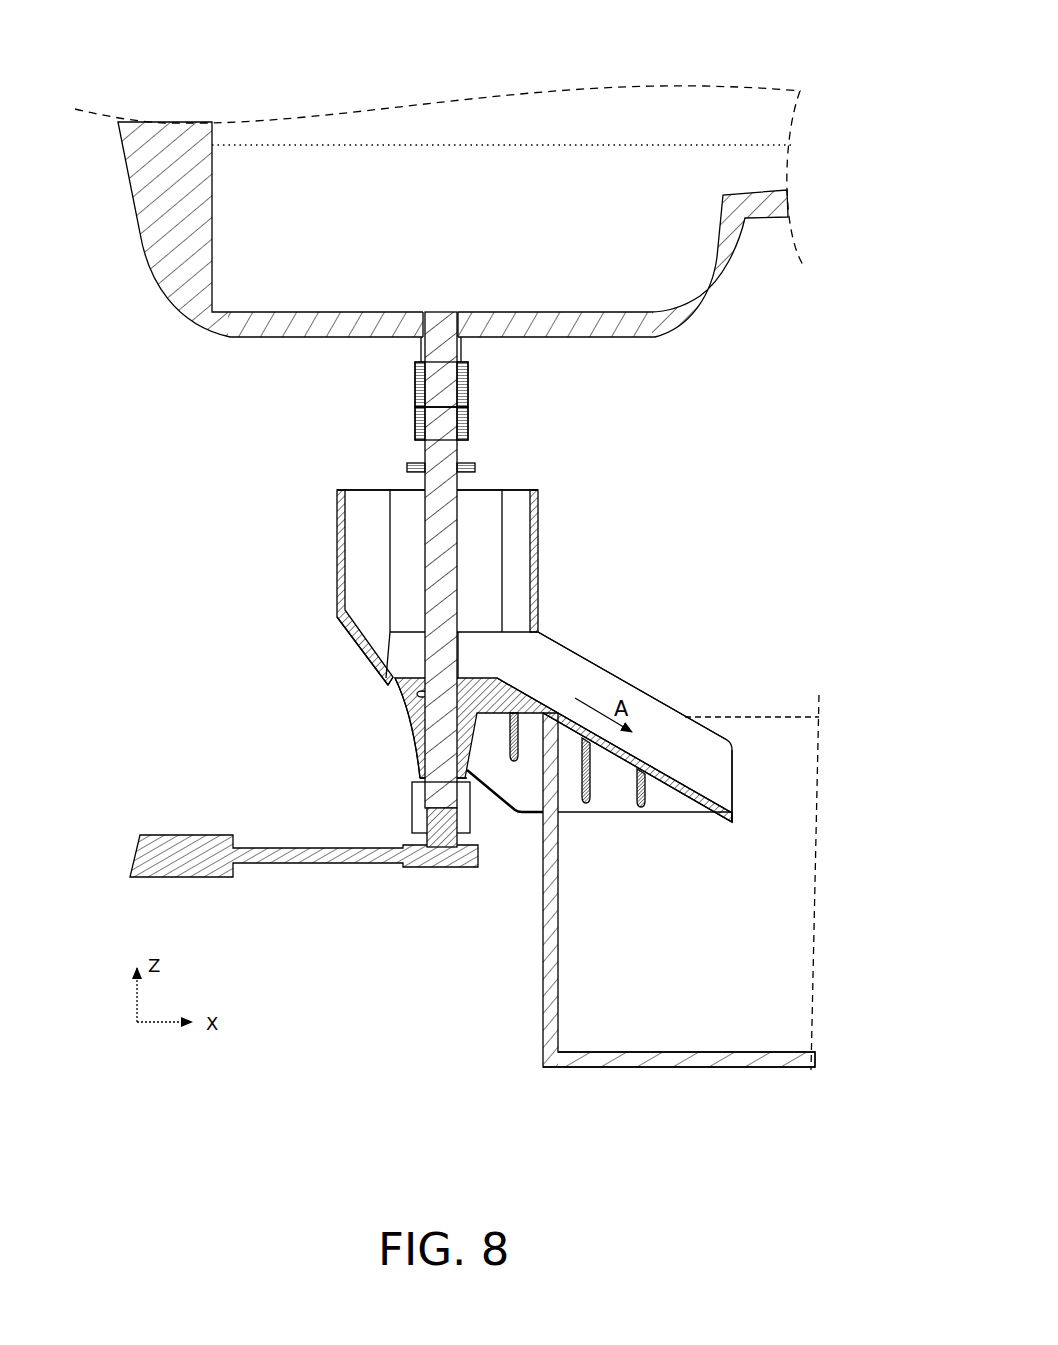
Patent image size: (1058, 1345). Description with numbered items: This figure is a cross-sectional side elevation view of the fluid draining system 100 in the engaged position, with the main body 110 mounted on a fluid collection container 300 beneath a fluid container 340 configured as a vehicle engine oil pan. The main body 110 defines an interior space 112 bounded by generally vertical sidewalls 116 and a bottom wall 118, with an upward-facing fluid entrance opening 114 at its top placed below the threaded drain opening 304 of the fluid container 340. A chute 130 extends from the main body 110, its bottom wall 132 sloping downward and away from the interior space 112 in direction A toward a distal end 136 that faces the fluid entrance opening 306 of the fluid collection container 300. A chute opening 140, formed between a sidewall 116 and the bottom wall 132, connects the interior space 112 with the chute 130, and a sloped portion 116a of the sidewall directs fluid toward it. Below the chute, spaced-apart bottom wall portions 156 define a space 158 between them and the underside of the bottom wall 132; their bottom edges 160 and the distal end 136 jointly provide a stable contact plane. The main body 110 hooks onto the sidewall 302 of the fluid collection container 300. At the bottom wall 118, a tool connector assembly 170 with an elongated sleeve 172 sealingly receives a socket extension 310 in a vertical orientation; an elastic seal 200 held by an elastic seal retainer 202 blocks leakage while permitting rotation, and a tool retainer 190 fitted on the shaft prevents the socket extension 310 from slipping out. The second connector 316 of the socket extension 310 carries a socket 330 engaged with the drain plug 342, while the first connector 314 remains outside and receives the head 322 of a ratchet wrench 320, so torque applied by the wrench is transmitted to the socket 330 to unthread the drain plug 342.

The fluid draining system 100 is at (665, 452).
The main body 110 is at (549, 506).
The interior space 112 is at (517, 555).
The fluid entrance opening 114 is at (531, 480).
The sidewalls 116 is at (337, 514).
The sloped portions 116a is at (347, 645).
The bottom wall 118 is at (393, 683).
The chute 130 is at (648, 670).
The bottom wall of the chute 132 is at (677, 780).
The distal end of the chute 136 is at (742, 800).
The chute opening 140 is at (528, 654).
The bottom wall portions 156 is at (617, 797).
The space 158 is at (597, 812).
The bottom edges 160 is at (604, 775).
The tool connector assembly 170 is at (405, 742).
The sleeve 172 is at (416, 768).
The tool retainer 190 is at (407, 467).
The elastic seal 200 is at (425, 708).
The elastic seal retainer 202 is at (423, 693).
The fluid collection container 300 is at (525, 1032).
The sidewall of the fluid collection container 302 is at (543, 958).
The drain opening 304 is at (425, 342).
The fluid entrance opening of the fluid collection container 306 is at (655, 145).
The socket extension 310 is at (420, 553).
The first connector 314 is at (412, 803).
The second connector 316 is at (445, 424).
The ratchet wrench 320 is at (222, 822).
The head of the ratchet wrench 322 is at (462, 820).
The socket 330 is at (415, 418).
The fluid container 340 is at (120, 192).
The drain plug 342 is at (425, 373).